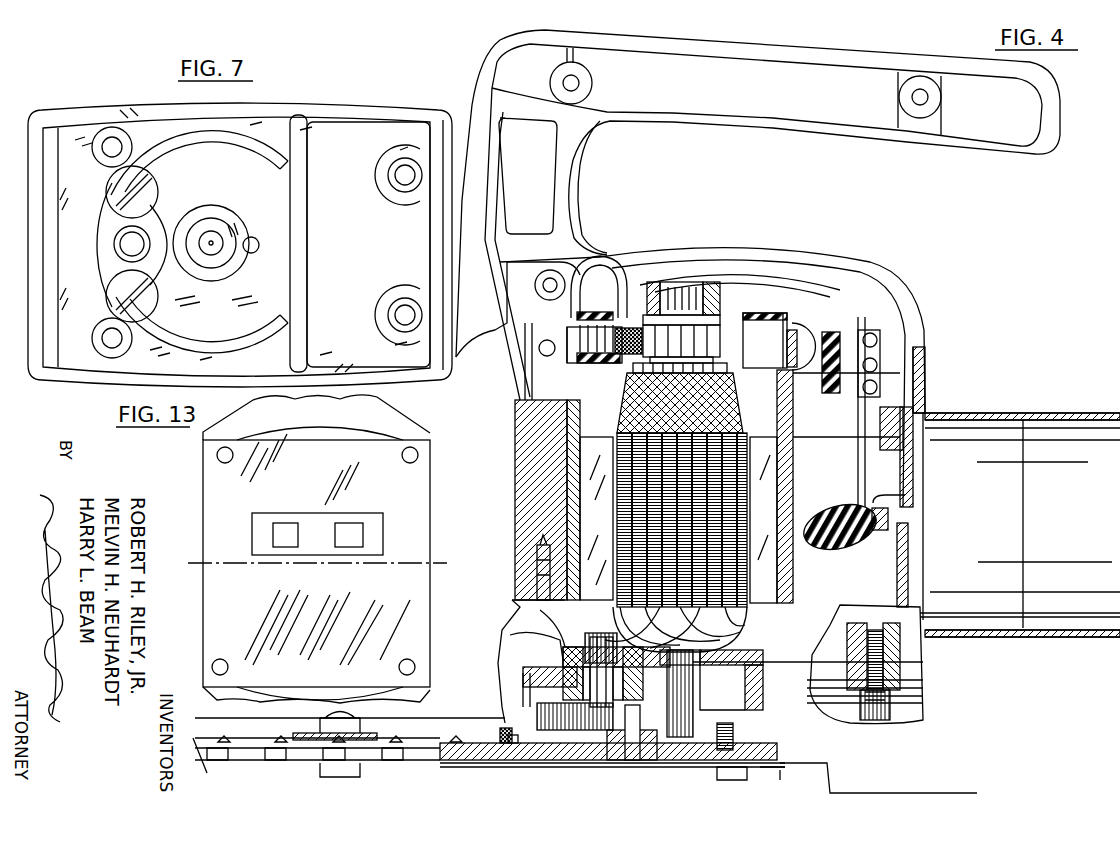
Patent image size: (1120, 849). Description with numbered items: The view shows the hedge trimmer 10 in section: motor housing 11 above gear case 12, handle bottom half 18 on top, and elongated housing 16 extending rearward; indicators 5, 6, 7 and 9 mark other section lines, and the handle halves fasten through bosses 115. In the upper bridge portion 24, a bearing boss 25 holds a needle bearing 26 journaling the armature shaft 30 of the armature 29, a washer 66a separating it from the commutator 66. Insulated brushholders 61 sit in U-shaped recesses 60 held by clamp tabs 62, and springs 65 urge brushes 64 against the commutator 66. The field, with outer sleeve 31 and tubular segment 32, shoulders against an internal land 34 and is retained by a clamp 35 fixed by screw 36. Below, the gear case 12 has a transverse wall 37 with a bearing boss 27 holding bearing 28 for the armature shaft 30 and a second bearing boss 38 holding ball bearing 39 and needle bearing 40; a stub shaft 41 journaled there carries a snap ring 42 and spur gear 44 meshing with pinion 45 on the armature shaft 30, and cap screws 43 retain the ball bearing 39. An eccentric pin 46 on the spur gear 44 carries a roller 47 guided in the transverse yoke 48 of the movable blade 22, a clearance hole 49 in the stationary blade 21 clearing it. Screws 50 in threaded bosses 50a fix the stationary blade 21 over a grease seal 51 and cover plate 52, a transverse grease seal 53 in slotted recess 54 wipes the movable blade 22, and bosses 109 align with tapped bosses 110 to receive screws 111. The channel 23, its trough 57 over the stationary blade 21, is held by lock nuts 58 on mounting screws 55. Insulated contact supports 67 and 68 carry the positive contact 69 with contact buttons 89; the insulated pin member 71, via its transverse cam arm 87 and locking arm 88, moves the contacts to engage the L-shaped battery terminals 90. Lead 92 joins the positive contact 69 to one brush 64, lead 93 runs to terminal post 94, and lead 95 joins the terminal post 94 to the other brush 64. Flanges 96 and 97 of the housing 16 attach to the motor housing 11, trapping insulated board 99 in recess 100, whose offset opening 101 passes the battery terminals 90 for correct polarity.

In FIG. 7, the gear case 12 is at (72, 108).
In FIG. 4, the gear case 12 is at (923, 707).
In FIG. 7, the bosses 109 is at (118, 140).
In FIG. 4, the bosses 109 is at (897, 683).
In FIG. 7, the transverse wall 37 is at (233, 165).
In FIG. 4, the transverse wall 37 is at (517, 677).
In FIG. 7, the cap screws 43 is at (148, 190).
In FIG. 7, the stub shaft 41 is at (125, 240).
In FIG. 4, the stub shaft 41 is at (603, 660).
In FIG. 7, the ball bearing 39 is at (110, 258).
In FIG. 4, the ball bearing 39 is at (590, 652).
In FIG. 13, the insulated board 99 is at (220, 490).
In FIG. 4, the insulated board 99 is at (905, 471).
In FIG. 13, the opening 101 is at (252, 523).
In FIG. 4, the opening 101 is at (905, 490).
In FIG. 13, the battery terminals 90 is at (273, 535).
In FIG. 4, the battery terminals 90 is at (912, 503).
In FIG. 13, the section line 7- 7 is at (460, 658).
In FIG. 4, the section line 7- 7 is at (987, 663).
In FIG. 13, the cordless electric hedge trimmer 10 is at (460, 698).
In FIG. 4, the cordless electric hedge trimmer 10 is at (1002, 695).
In FIG. 4, the bottom half 18 is at (493, 52).
In FIG. 4, the bosses 115 is at (582, 86).
In FIG. 4, the motor housing 11 is at (478, 255).
In FIG. 4, the internal land 34 is at (583, 418).
In FIG. 4, the terminal post 94 is at (543, 282).
In FIG. 4, the clamp tabs 62 is at (567, 312).
In FIG. 4, the brushholder 61 is at (583, 362).
In FIG. 4, the springs 65 is at (615, 340).
In FIG. 4, the U-shaped recesses 60 is at (578, 352).
In FIG. 4, the section line 6- 6 is at (603, 303).
In FIG. 4, the section line 5- 5 is at (553, 452).
In FIG. 4, the upper bridge portion 24 is at (760, 290).
In FIG. 4, the lead 92 is at (818, 300).
In FIG. 4, the lead 93 is at (850, 300).
In FIG. 4, the washer 66a is at (700, 298).
In FIG. 4, the armature shaft 30 is at (706, 297).
In FIG. 4, the bearing boss 25 is at (712, 320).
In FIG. 4, the lead 95 is at (607, 258).
In FIG. 4, the electrical brush 64 is at (658, 305).
In FIG. 4, the bearing 26 is at (690, 300).
In FIG. 4, the commutator 66 is at (722, 300).
In FIG. 4, the contact support 67 is at (875, 345).
In FIG. 4, the contact support 68 is at (833, 395).
In FIG. 4, the flange 96 is at (908, 365).
In FIG. 4, the flange 97 is at (925, 366).
In FIG. 4, the recess 100 is at (905, 453).
In FIG. 4, the positive contact 69 is at (850, 467).
In FIG. 4, the contact buttons 89 is at (882, 480).
In FIG. 4, the transverse cam arm 87 is at (882, 545).
In FIG. 4, the locking arm 88 is at (888, 522).
In FIG. 4, the insulated pin member 71 is at (840, 550).
In FIG. 4, the elongated housing 16 is at (1087, 413).
In FIG. 4, the tapped bosses 110 is at (892, 642).
In FIG. 4, the screws 111 is at (883, 720).
In FIG. 4, the section line 9- 9 is at (970, 795).
In FIG. 4, the outer concentric sleeve 31 is at (570, 502).
In FIG. 4, the permanently-magnetic tubular segment 32 is at (590, 522).
In FIG. 4, the screw 36 is at (543, 582).
In FIG. 4, the clamp 35 is at (567, 602).
In FIG. 4, the needle bearing 40 is at (563, 662).
In FIG. 4, the second bearing boss 38 is at (545, 680).
In FIG. 4, the snap ring 42 is at (600, 640).
In FIG. 4, the transverse yoke 48 is at (578, 732).
In FIG. 4, the roller 47 is at (609, 765).
In FIG. 4, the eccentric pin 46 is at (632, 762).
In FIG. 4, the bearing 28 is at (700, 662).
In FIG. 4, the armature 29 is at (705, 650).
In FIG. 4, the bearing boss 27 is at (740, 675).
In FIG. 4, the pinion 45 is at (713, 736).
In FIG. 4, the clearance hole 49 is at (652, 765).
In FIG. 4, the screws 50 is at (732, 780).
In FIG. 4, the threaded bosses 50a is at (770, 775).
In FIG. 4, the single-reduction spur gear 44 is at (572, 732).
In FIG. 4, the cover plate 52 is at (500, 768).
In FIG. 4, the grease seal 51 is at (452, 766).
In FIG. 4, the transverse grease seal 53 is at (508, 740).
In FIG. 4, the slotted recess 54 is at (500, 740).
In FIG. 4, the stationary blade 21 is at (297, 752).
In FIG. 4, the movable blade 22 is at (265, 742).
In FIG. 4, the channel 23 is at (220, 732).
In FIG. 4, the lock nuts 58 is at (315, 733).
In FIG. 4, the mounting screws 55 is at (355, 770).
In FIG. 4, the trough 57 is at (375, 755).